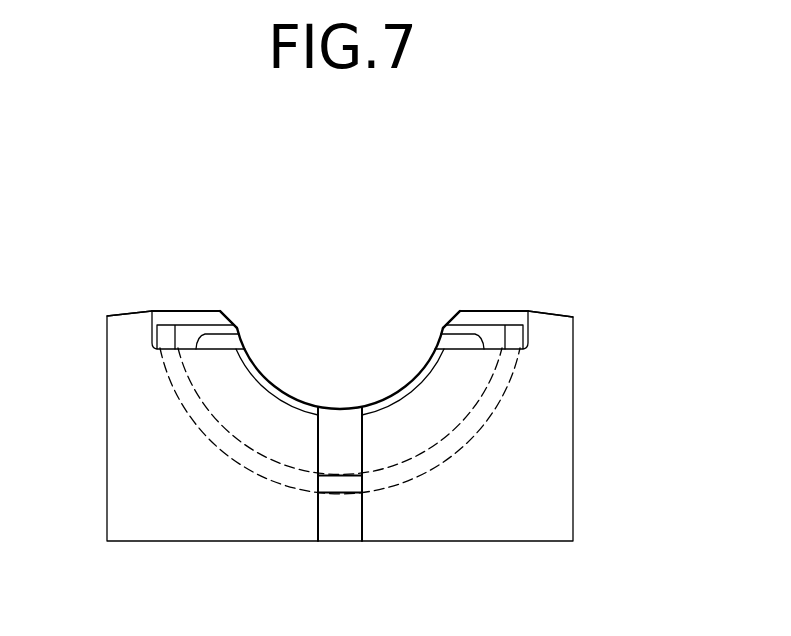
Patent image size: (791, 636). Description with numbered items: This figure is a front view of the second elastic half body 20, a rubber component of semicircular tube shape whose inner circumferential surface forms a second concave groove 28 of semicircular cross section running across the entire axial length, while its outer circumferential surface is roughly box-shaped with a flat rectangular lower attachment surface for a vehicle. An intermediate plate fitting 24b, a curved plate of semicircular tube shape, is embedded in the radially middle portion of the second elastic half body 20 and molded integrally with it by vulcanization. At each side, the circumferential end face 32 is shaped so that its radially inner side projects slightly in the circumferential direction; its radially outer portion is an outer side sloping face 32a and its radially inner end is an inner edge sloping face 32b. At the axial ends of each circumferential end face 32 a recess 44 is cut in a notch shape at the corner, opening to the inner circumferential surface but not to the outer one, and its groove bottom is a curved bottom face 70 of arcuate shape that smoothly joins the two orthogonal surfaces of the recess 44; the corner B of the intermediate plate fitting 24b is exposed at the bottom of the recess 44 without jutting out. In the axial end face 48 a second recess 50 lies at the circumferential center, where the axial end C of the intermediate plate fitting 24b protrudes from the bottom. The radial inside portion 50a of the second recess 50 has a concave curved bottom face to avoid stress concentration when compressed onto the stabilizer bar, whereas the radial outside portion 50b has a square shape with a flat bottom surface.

The second elastic half body 20 is at (603, 254).
The intermediate plate fitting 24b is at (275, 494).
The second concave groove 28 is at (392, 398).
The circumferential end face 32 is at (182, 308).
The outer side sloping face 32a is at (128, 311).
The inner edge sloping face 32b is at (230, 312).
The recess 44 is at (205, 305).
The axial end face 48 is at (558, 440).
The second recess 50 is at (323, 402).
The radial inside portion 50a is at (352, 435).
The radial outside portion 50b is at (332, 512).
The curved bottom face 70 is at (243, 334).
The corner B is at (167, 340).
The axial end C is at (352, 485).